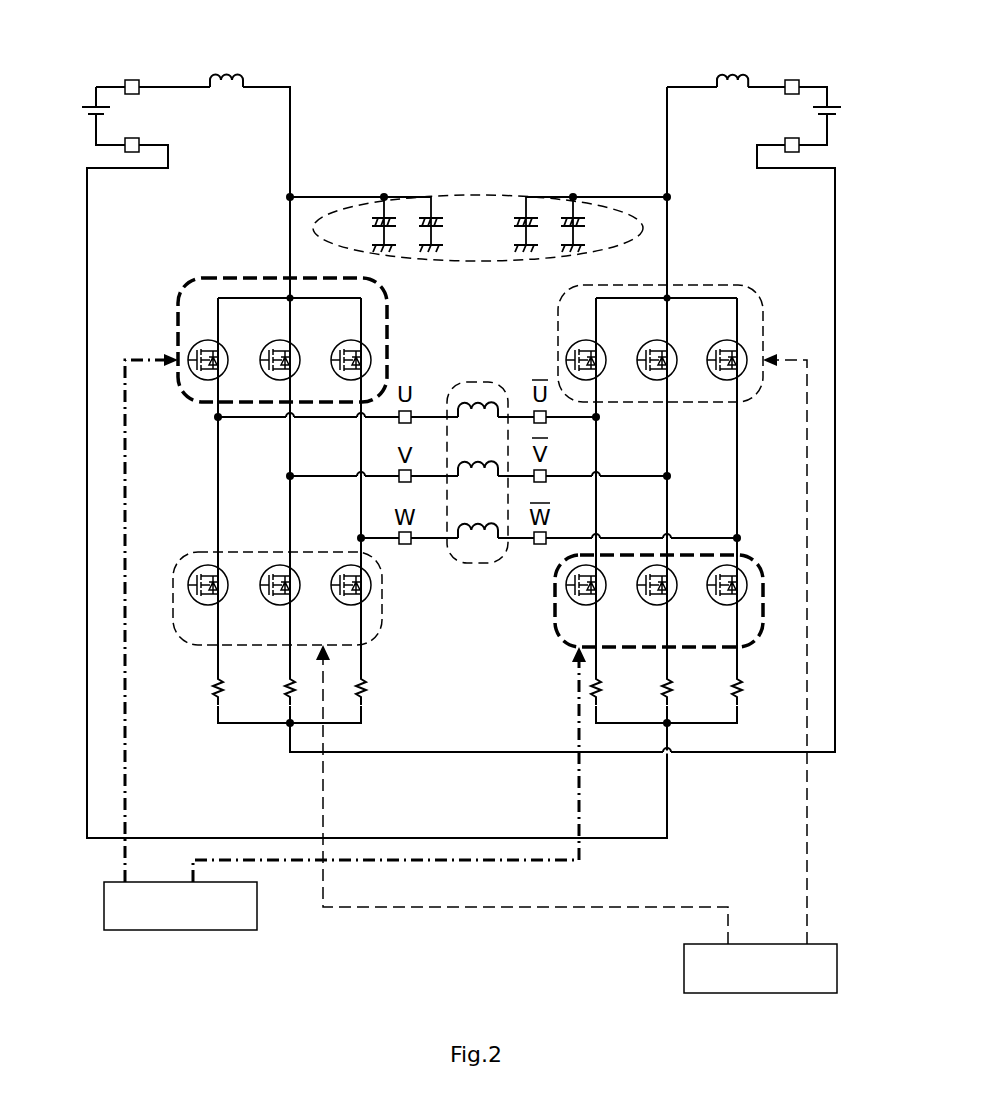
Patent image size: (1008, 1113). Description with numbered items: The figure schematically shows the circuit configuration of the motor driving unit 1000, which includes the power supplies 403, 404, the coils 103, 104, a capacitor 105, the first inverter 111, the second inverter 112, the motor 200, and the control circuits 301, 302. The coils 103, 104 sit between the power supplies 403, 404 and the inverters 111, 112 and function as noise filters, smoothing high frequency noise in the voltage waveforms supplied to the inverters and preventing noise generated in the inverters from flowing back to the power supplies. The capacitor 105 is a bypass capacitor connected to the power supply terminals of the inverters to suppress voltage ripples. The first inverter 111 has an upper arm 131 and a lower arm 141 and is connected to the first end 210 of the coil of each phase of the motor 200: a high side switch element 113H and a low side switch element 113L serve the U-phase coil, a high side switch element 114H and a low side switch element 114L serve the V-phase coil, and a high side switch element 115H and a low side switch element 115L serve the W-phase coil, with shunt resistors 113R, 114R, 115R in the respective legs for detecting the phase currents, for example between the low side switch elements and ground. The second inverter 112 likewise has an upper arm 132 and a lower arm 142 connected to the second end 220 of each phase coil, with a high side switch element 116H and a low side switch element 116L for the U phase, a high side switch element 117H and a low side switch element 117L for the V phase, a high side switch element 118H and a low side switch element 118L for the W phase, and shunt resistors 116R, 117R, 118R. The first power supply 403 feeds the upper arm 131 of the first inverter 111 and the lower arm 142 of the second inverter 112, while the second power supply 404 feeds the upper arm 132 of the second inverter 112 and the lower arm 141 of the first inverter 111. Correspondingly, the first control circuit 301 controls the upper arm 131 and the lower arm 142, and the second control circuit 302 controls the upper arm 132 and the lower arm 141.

The motor driving unit 1000 is at (434, 74).
The coil 103 is at (228, 71).
The coil 104 is at (733, 70).
The first power supply 403 is at (103, 109).
The second power supply 404 is at (812, 108).
The capacitor 105 is at (462, 200).
The first inverter 111 is at (118, 243).
The second inverter 112 is at (810, 243).
The upper arm 131 is at (263, 278).
The upper arm 132 is at (675, 285).
The lower arm 141 is at (190, 465).
The lower arm 142 is at (755, 495).
The high side switch element 113H is at (222, 348).
The high side switch element 114H is at (294, 348).
The high side switch element 115H is at (366, 348).
The high side switch element 116H is at (586, 348).
The high side switch element 117H is at (654, 348).
The high side switch element 118H is at (720, 348).
The low side switch element 113L is at (221, 600).
The low side switch element 114L is at (292, 600).
The low side switch element 115L is at (364, 600).
The low side switch element 116L is at (598, 600).
The low side switch element 117L is at (669, 600).
The low side switch element 118L is at (740, 600).
The shunt resistor 113R is at (212, 692).
The shunt resistor 114R is at (284, 692).
The shunt resistor 115R is at (367, 692).
The shunt resistor 116R is at (590, 692).
The shunt resistor 117R is at (673, 692).
The shunt resistor 118R is at (743, 692).
The motor 200 is at (470, 378).
The first end 210 is at (405, 530).
The second end 220 is at (528, 420).
The first control circuit 301 is at (163, 932).
The second control circuit 302 is at (783, 940).